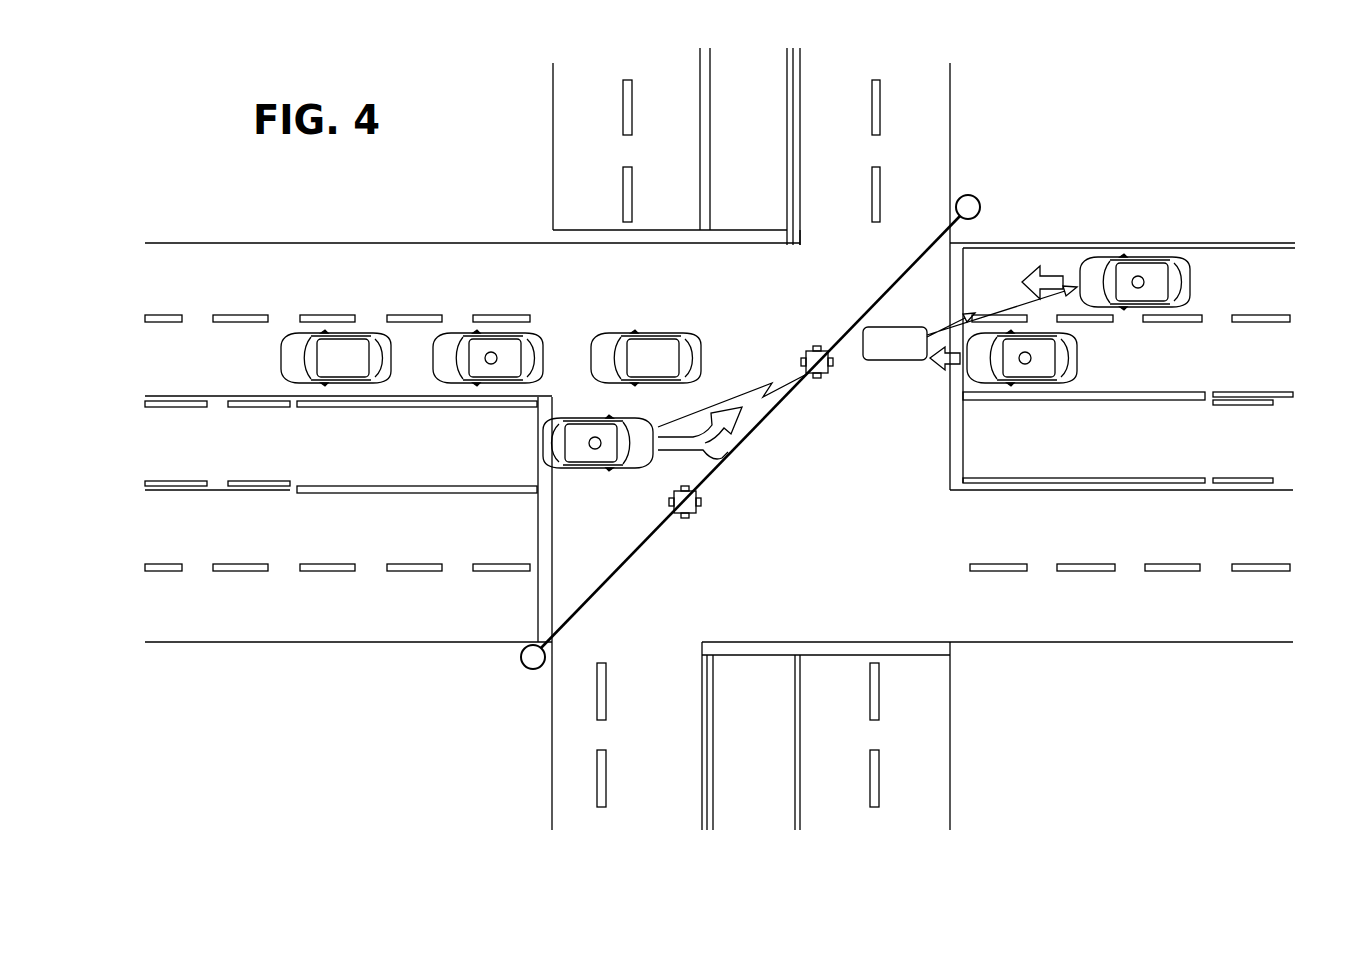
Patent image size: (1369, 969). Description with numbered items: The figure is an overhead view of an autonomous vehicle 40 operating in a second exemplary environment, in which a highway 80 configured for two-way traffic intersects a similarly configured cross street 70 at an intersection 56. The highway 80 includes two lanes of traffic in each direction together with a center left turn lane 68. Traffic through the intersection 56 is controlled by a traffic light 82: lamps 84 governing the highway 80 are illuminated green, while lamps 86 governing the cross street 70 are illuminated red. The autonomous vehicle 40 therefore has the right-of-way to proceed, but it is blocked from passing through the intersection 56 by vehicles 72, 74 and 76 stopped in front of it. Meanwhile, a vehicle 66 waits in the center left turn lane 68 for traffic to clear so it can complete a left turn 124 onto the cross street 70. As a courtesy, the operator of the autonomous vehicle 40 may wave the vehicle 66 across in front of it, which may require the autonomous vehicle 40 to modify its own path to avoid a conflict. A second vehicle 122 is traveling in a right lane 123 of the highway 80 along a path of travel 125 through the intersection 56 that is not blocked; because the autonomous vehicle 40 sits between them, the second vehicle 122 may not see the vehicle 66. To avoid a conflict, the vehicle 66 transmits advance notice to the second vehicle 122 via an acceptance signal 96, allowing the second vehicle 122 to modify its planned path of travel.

The cross street 70 is at (965, 53).
The highway 80 is at (1310, 232).
The center left turn lane 68 is at (441, 470).
The intersection 56 is at (866, 519).
The vehicle 66 is at (590, 470).
The vehicle 72 is at (620, 333).
The vehicle 74 is at (532, 333).
The vehicle 76 is at (365, 333).
The traffic light 82 is at (805, 355).
The lamps 84 is at (800, 362).
The lamps 86 is at (820, 346).
The acceptance signal 96 is at (903, 362).
The second vehicle 122 is at (1147, 257).
The right lane 123 is at (1246, 280).
The left turn 124 is at (733, 450).
The path of travel 125 is at (1058, 272).
The autonomous vehicle 40 is at (1077, 368).